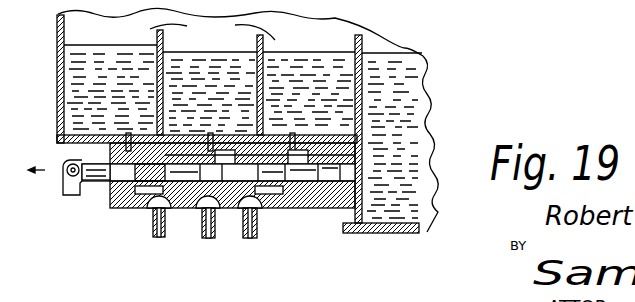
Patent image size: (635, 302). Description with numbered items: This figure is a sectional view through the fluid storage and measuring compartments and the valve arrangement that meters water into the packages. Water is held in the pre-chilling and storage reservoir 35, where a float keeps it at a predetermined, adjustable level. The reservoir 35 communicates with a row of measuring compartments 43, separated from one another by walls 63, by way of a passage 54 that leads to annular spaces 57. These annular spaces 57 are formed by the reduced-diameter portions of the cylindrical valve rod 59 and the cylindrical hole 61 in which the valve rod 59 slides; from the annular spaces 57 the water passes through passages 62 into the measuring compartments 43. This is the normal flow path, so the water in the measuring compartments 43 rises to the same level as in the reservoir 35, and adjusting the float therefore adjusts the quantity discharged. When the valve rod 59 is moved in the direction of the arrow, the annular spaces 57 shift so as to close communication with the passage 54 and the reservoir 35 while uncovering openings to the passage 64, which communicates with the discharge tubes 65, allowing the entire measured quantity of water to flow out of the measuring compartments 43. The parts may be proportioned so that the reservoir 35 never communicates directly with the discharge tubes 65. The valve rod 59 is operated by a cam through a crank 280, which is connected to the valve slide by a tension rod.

The pre-chilling and storage reservoir 35 is at (427, 72).
The measuring compartments 43 is at (221, 43).
The walls 63 is at (156, 38).
The passages 62 is at (128, 140).
The passage 54 is at (353, 160).
The cylindrical hole 61 is at (340, 178).
The cylindrical valve rod 59 is at (103, 183).
The crank 280 is at (60, 191).
The annular spaces 57 is at (170, 207).
The passage 64 is at (135, 192).
The discharge tubes 65 is at (157, 238).